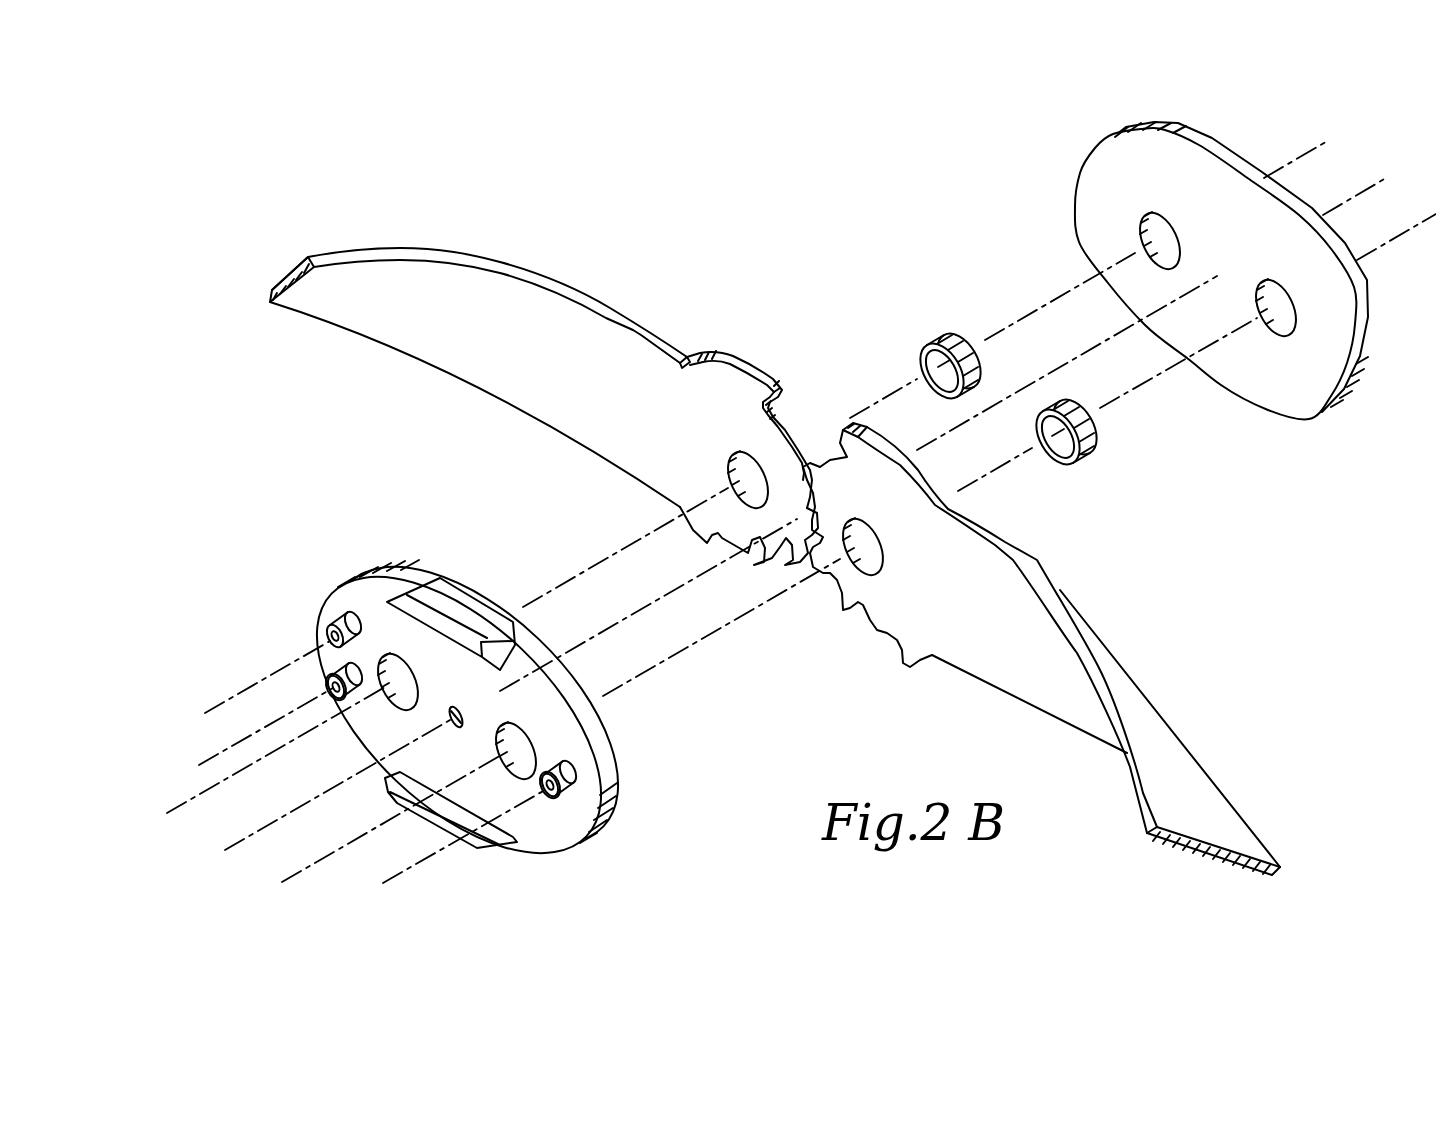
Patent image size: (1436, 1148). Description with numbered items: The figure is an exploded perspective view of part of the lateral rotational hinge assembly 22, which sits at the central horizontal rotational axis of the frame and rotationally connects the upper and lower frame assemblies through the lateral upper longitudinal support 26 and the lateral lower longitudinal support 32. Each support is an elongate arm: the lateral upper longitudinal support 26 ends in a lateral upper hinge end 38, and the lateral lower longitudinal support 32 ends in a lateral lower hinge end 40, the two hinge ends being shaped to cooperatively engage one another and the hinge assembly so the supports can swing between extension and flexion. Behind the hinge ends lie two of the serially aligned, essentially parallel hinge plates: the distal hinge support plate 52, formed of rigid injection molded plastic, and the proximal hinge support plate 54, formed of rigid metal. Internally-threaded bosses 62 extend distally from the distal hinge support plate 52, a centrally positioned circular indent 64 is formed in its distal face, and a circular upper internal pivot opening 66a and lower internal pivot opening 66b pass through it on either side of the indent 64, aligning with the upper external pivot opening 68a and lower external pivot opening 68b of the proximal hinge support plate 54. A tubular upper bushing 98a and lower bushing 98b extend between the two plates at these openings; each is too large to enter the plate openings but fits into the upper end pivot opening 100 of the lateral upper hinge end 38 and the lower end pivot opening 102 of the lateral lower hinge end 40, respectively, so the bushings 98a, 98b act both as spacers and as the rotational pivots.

The lateral rotational hinge assembly 22 is at (815, 222).
The lateral upper longitudinal support 26 is at (1140, 700).
The lateral lower longitudinal support 32 is at (487, 265).
The lateral upper hinge end 38 is at (913, 461).
The lateral lower hinge end 40 is at (733, 355).
The distal hinge support plate 52 is at (370, 572).
The proximal hinge support plate 54 is at (1173, 146).
The internally-threaded bosses 62 is at (327, 630).
The circular indent 64 is at (450, 724).
The upper internal pivot opening 66a is at (565, 805).
The lower internal pivot opening 66b is at (335, 692).
The upper external pivot opening 68a is at (1283, 335).
The lower external pivot opening 68b is at (1137, 243).
The upper bushing 98a is at (1083, 447).
The lower bushing 98b is at (948, 330).
The upper end pivot opening 100 is at (853, 565).
The lower end pivot opening 102 is at (727, 468).